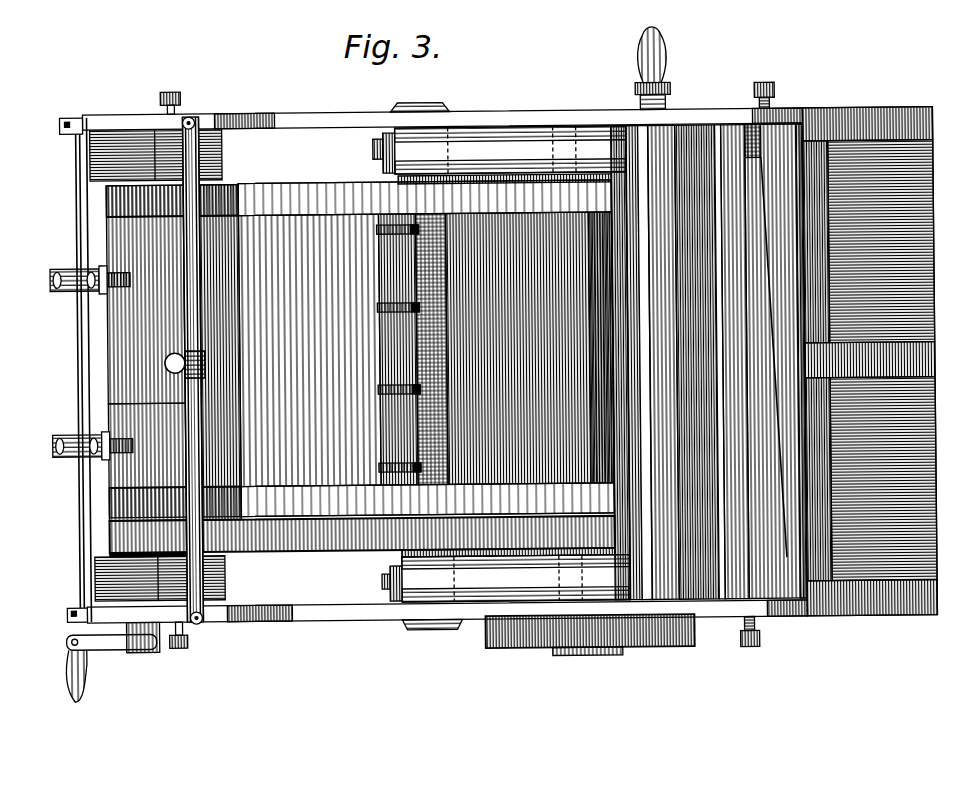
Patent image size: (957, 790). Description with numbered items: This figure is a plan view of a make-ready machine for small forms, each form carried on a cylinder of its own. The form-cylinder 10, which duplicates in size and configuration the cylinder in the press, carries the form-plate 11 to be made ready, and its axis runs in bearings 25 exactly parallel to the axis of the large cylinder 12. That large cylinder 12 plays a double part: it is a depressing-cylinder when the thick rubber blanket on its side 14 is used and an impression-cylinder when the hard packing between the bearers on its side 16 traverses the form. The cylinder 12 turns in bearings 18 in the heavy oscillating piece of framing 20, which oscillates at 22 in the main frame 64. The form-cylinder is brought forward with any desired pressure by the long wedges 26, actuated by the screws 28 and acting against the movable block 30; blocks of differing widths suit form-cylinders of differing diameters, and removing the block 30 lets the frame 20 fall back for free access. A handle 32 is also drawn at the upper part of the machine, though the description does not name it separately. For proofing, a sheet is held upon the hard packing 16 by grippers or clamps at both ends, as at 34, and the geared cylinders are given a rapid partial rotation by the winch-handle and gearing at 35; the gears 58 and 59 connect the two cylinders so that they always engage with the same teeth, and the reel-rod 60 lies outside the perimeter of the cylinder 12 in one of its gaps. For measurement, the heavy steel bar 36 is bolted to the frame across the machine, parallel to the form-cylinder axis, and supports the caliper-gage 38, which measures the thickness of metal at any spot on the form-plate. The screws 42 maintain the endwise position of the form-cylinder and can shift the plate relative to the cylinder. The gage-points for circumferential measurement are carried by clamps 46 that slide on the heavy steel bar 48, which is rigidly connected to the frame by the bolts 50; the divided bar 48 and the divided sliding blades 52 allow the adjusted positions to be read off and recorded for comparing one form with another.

The form-cylinder 10 is at (125, 368).
The form-plate 11 is at (174, 462).
The large cylinder 12 is at (360, 336).
The thick rubber blanket side 14 is at (529, 348).
The hard packing side 16 is at (309, 350).
The bearings 18 is at (392, 630).
The oscillating piece of framing 20 is at (557, 363).
The oscillation pivot 22 is at (440, 104).
The bearings of the form-cylinder 25 is at (158, 365).
The long wedges 26 is at (776, 359).
The screws 28 is at (778, 95).
The movable block 30 is at (724, 362).
The handle 32 is at (674, 90).
The grippers or clamps 34 is at (188, 372).
The winch-handle and gearing 35 is at (120, 553).
The heavy steel bar 36 is at (188, 302).
The caliper-gage 38 is at (170, 351).
The screws 42 is at (181, 95).
The clamps 46 is at (60, 292).
The heavy steel bar 48 is at (78, 230).
The bolts 50 is at (68, 116).
The sliding blades 52 is at (128, 276).
The gear 58 is at (125, 537).
The gear 59 is at (298, 550).
The reel-rod 60 is at (452, 352).
The main frame 64 is at (280, 115).